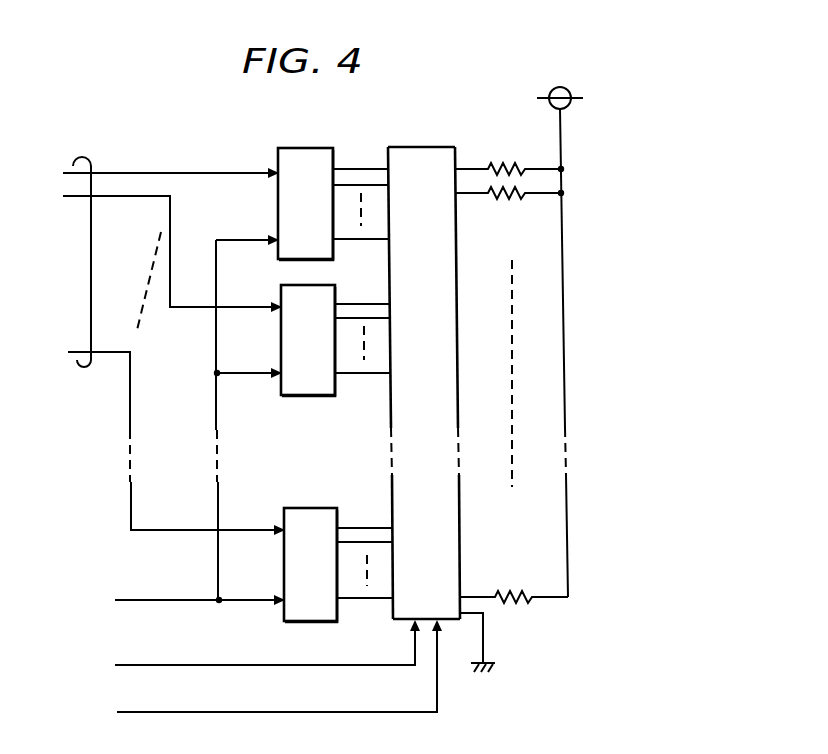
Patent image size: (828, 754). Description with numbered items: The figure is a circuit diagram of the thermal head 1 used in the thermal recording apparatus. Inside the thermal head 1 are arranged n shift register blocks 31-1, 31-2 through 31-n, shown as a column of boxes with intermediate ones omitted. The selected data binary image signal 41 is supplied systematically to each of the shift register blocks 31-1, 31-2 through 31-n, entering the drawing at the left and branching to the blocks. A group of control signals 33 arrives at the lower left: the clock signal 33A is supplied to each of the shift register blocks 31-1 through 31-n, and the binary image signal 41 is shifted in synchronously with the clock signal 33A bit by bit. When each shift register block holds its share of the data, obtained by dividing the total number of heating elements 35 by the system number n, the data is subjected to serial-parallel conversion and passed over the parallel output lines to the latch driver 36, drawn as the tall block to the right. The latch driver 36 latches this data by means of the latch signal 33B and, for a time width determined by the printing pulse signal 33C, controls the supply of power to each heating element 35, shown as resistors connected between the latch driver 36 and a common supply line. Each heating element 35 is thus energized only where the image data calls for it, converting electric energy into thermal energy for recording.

The thermal head 1 is at (190, 149).
The binary image signal 41 is at (81, 156).
The shift register block 31-1 is at (302, 147).
The shift register block 31-2 is at (306, 396).
The shift register block 31-n is at (309, 507).
The latch driver 36 is at (422, 146).
The heating element 35 is at (507, 163).
The control signals 33 is at (67, 585).
The clock signal 33A is at (177, 603).
The latch signal 33B is at (245, 649).
The printing pulse signal 33C is at (256, 672).